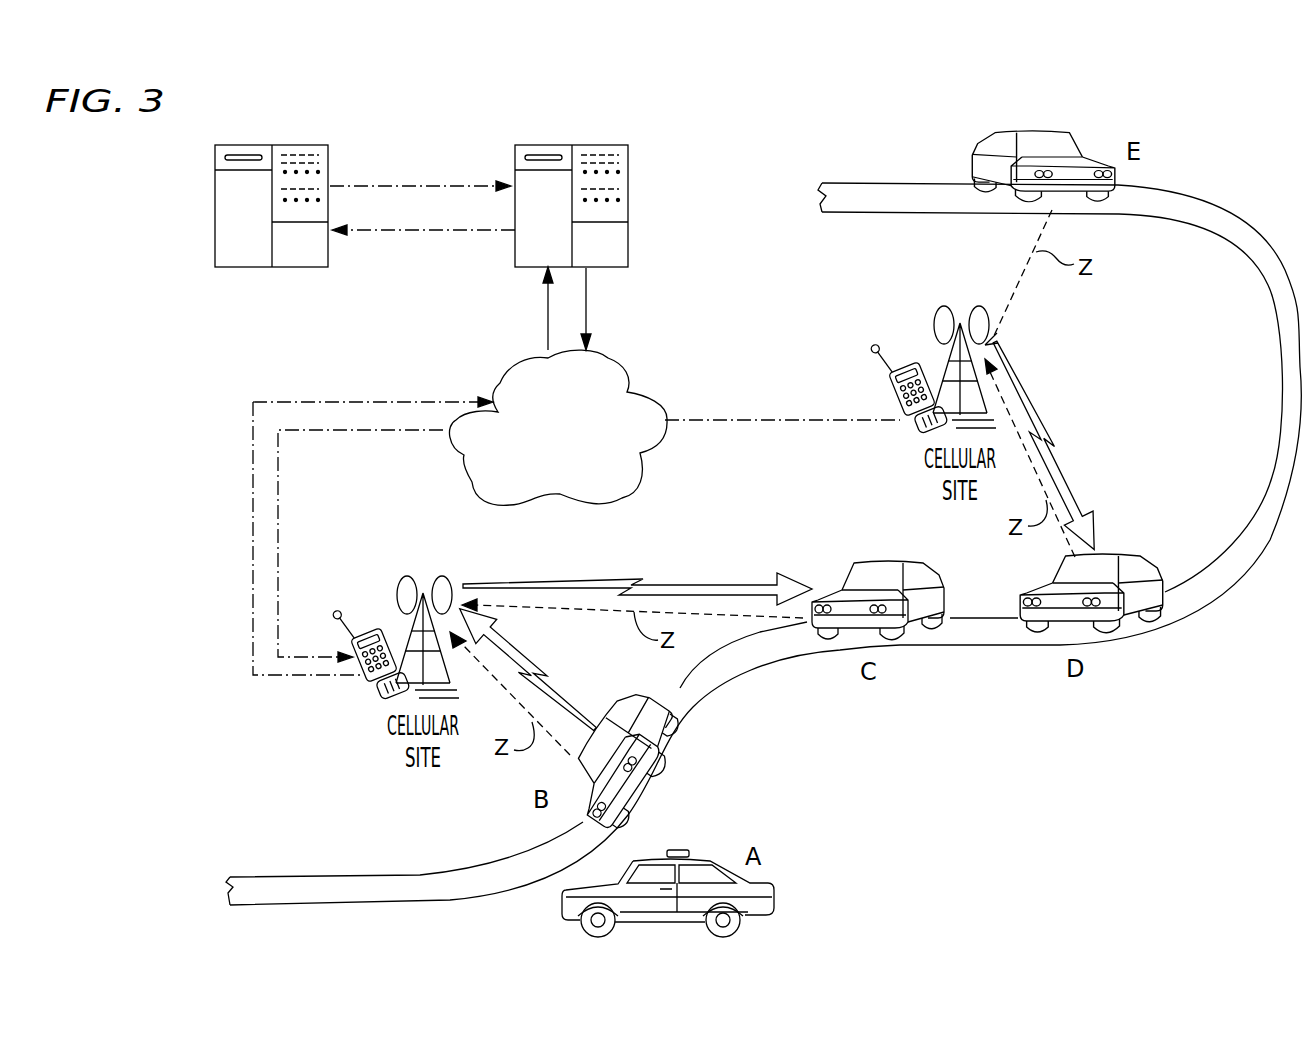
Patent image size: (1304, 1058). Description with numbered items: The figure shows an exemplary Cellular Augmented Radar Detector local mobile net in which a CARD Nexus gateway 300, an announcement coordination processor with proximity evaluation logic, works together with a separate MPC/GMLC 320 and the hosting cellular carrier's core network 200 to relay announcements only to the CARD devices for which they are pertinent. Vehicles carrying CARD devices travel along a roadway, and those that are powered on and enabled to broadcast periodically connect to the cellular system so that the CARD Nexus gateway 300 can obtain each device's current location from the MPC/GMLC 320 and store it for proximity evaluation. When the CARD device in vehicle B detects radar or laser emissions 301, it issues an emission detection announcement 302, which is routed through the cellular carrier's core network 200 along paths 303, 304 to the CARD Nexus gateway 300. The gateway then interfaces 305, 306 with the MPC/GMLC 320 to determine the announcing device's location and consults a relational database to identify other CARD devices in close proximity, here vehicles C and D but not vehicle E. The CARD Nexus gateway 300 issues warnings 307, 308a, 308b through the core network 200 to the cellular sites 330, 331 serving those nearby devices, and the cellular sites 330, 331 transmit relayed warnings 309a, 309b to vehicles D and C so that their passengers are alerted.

The cellular carrier's core network 200 is at (643, 455).
The CARD Nexus gateway 300 is at (630, 173).
The MPC/GMLC 320 is at (245, 268).
The radar or laser emissions 301 is at (784, 786).
The emission detection announcement 302 is at (520, 660).
The core network routing of the emission detection announcement 303 is at (252, 514).
The core network routing to the CARD Nexus gateway 304 is at (546, 303).
The interface from CARD Nexus gateway to MPC/GMLC 305 is at (410, 234).
The interface from MPC/GMLC to CARD Nexus gateway 306 is at (409, 182).
The warning from CARD Nexus gateway 307 is at (589, 305).
The warning to first cellular site 308a is at (804, 417).
The warning to second cellular site 308b is at (282, 520).
The relayed warning to vehicle D 309a is at (1075, 492).
The relayed warning to vehicle C 309b is at (702, 582).
The cellular site 330 is at (900, 435).
The cellular site 331 is at (364, 694).